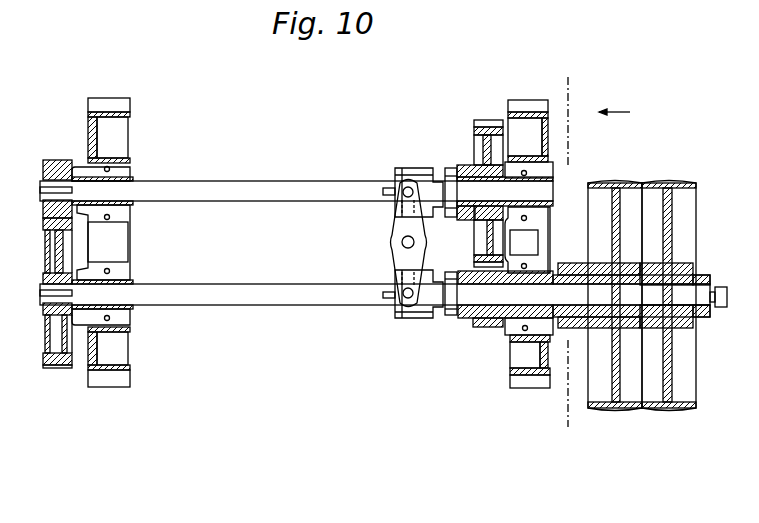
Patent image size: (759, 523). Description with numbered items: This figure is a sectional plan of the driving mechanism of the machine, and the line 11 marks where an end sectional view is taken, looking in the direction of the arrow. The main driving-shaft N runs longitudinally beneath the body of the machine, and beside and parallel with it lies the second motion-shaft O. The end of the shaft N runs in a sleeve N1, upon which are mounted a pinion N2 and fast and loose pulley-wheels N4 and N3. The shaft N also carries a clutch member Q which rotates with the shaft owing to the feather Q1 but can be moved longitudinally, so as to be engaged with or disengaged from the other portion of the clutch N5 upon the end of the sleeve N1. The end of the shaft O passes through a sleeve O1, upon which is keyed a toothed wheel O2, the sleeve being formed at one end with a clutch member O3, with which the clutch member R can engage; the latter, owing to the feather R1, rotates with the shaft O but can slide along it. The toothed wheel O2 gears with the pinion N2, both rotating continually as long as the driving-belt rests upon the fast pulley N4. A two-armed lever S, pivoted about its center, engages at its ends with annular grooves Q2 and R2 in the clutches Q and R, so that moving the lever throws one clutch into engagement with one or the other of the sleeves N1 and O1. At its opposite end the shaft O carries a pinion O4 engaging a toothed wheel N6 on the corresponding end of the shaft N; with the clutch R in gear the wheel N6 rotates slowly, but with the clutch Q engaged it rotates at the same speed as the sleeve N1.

The second motion-shaft O is at (272, 192).
The sleeve O1 is at (477, 167).
The toothed wheel O2 is at (488, 122).
The clutch member O3 is at (452, 168).
The pinion O4 is at (55, 160).
The clutch member R is at (420, 172).
The feather R1 is at (386, 188).
The annular groove R2 is at (398, 176).
The two-armed lever S is at (396, 226).
The clutch member Q is at (432, 314).
The feather Q1 is at (386, 298).
The annular groove Q2 is at (408, 318).
The main driving-shaft N is at (258, 305).
The sleeve N1 is at (568, 327).
The pinion N2 is at (488, 327).
The loose pulley-wheel N3 is at (679, 409).
The fast pulley-wheel N4 is at (622, 409).
The clutch N5 is at (455, 316).
The toothed wheel N6 is at (60, 368).
The section line 11 is at (590, 253).